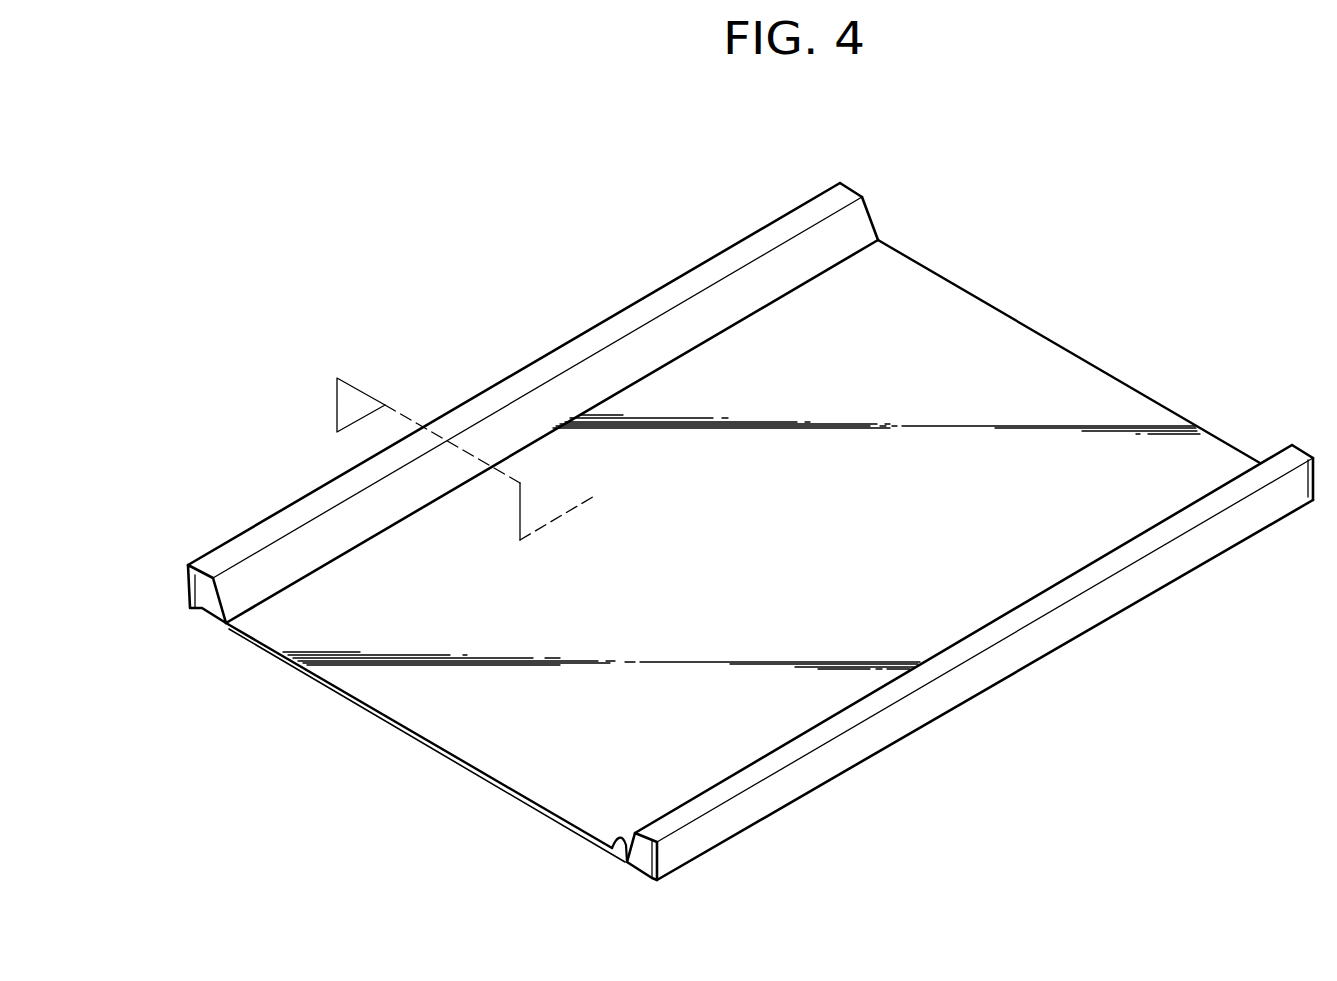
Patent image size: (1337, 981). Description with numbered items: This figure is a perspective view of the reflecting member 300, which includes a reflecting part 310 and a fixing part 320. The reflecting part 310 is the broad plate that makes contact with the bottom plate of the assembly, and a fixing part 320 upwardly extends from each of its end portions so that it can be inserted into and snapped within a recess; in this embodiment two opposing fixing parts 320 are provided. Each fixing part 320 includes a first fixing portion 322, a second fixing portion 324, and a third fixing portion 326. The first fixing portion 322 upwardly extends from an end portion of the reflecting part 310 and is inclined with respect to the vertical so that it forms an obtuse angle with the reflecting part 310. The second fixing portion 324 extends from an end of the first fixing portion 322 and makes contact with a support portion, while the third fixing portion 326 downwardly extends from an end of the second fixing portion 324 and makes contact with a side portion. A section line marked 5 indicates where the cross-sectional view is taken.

The reflecting member 300 is at (863, 152).
The reflecting part 310 is at (480, 745).
The fixing part 320 is at (913, 709).
The first fixing portion 322 is at (618, 838).
The second fixing portion 324 is at (707, 802).
The third fixing portion 326 is at (805, 778).
The section line for FIG. 5 is at (393, 401).